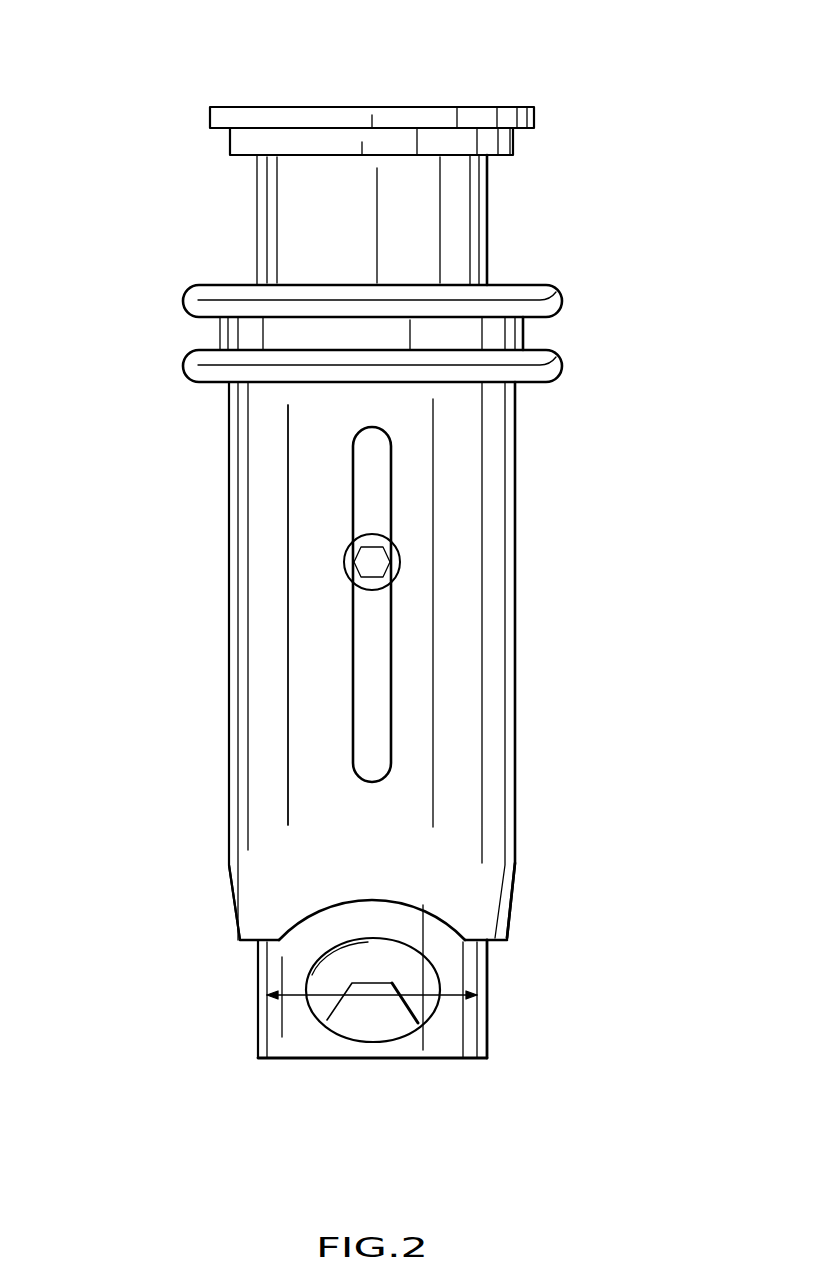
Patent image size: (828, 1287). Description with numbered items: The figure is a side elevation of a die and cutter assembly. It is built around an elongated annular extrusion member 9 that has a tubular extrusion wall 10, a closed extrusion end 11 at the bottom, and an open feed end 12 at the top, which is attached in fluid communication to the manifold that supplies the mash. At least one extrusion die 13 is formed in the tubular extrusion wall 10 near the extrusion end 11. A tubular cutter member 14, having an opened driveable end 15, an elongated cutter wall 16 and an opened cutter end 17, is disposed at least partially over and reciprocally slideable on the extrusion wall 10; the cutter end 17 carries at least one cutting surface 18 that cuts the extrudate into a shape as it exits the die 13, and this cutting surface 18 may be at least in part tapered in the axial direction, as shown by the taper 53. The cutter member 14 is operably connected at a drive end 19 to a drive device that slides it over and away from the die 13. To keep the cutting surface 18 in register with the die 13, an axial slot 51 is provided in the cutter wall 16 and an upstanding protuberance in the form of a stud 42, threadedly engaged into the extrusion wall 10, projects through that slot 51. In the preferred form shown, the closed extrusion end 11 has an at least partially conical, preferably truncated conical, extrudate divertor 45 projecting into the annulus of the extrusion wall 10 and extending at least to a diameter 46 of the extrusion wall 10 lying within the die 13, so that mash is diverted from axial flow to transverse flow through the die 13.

The open feed end 12 is at (402, 100).
The elongated annular extrusion member 9 is at (488, 218).
The opened driveable end 15 is at (456, 279).
The drive end 19 is at (220, 332).
The tubular cutter member 14 is at (518, 627).
The elongated cutter wall 16 is at (273, 693).
The slot 51 is at (392, 683).
The stud 42 is at (375, 560).
The taper 53 is at (233, 913).
The opened cutter end 17 is at (512, 902).
The extrusion die 13 is at (373, 957).
The cutting surface 18 is at (313, 912).
The tubular extrusion wall 10 is at (448, 957).
The closed extrusion end 11 is at (407, 1060).
The extrudate divertor 45 is at (363, 1013).
The diameter 46 is at (425, 1005).